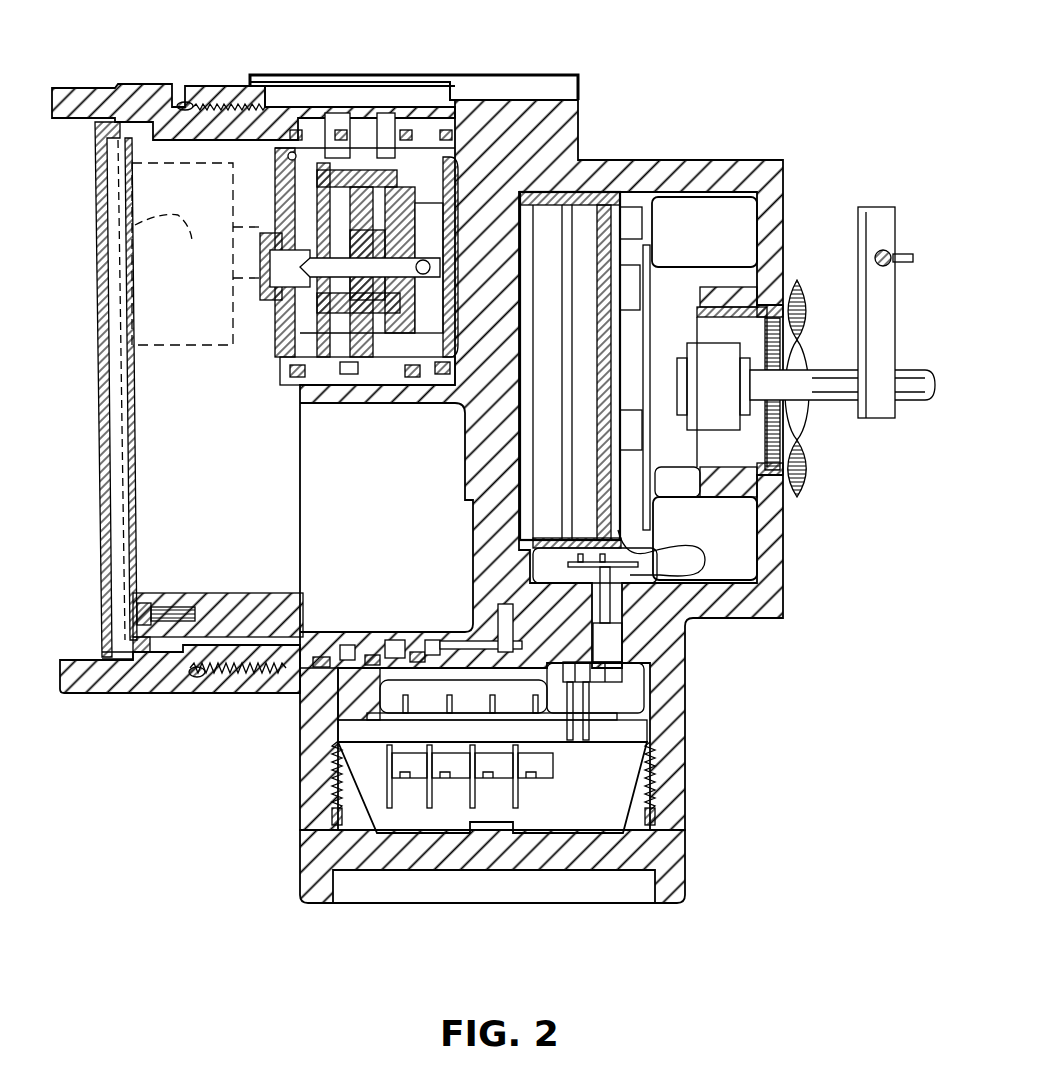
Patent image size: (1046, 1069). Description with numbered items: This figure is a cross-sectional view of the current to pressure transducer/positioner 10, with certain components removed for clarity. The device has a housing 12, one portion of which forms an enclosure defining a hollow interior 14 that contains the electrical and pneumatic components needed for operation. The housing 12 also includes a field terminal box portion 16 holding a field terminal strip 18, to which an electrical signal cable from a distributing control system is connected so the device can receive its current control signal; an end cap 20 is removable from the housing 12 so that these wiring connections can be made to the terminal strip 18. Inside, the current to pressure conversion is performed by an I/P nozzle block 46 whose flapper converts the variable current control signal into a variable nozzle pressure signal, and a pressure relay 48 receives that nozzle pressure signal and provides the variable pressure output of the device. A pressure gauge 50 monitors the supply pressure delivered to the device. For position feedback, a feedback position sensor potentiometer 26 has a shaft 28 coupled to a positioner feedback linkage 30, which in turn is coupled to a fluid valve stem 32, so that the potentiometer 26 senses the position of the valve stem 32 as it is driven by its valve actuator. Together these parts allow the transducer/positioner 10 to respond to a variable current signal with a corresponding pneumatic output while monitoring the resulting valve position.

The current to pressure transducer/positioner 10 is at (676, 114).
The housing 12 is at (437, 118).
The hollow interior 14 is at (712, 248).
The field terminal box portion 16 is at (602, 789).
The field terminal strip 18 is at (468, 797).
The end cap 20 is at (658, 850).
The feedback position sensor potentiometer 26 is at (783, 500).
The shaft 28 is at (833, 372).
The positioner feedback linkage 30 is at (877, 390).
The fluid valve stem 32 is at (880, 252).
The I/P nozzle block 46 is at (183, 462).
The pressure relay 48 is at (290, 160).
The pressure gauge 50 is at (112, 228).